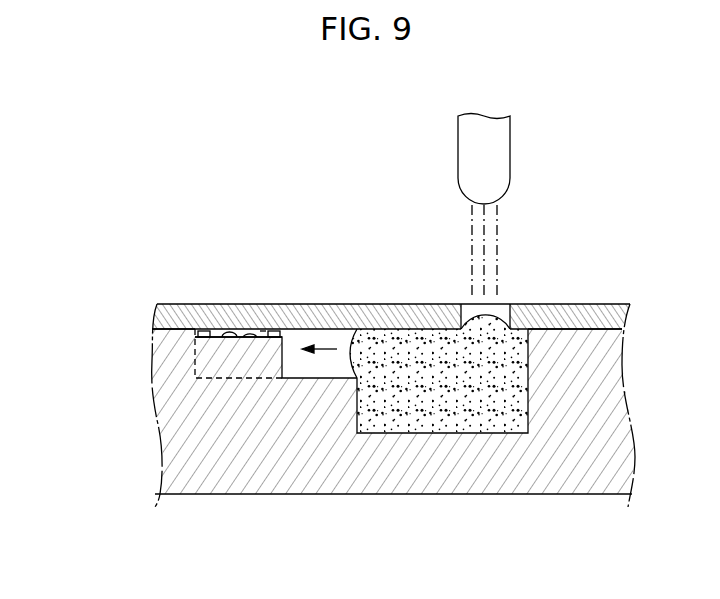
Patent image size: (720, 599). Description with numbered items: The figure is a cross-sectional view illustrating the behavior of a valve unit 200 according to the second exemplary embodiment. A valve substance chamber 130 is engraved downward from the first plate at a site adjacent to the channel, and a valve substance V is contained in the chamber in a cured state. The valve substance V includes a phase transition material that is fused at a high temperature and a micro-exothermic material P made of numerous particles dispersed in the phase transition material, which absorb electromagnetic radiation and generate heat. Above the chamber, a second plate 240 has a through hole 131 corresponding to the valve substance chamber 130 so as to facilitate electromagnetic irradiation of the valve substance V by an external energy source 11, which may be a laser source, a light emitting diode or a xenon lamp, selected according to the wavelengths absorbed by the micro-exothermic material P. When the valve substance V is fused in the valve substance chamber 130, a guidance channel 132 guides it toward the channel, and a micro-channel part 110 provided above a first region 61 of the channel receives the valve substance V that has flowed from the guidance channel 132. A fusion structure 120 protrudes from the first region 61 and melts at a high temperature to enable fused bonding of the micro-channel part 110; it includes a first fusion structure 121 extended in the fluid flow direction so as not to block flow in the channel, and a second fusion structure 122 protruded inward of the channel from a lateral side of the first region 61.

The valve unit 200 is at (125, 283).
The second plate 240 is at (588, 303).
The valve substance chamber 130 is at (525, 403).
The through hole 131 is at (502, 303).
The guidance channel 132 is at (318, 364).
The micro-exothermic material P is at (450, 407).
The valve substance V is at (407, 411).
The external energy source 11 is at (502, 147).
The fusion structure 120 is at (197, 335).
The first fusion structure 121 is at (232, 330).
The second fusion structure 122 is at (203, 330).
The micro-channel part 110 is at (262, 332).
The first region 61 is at (198, 370).